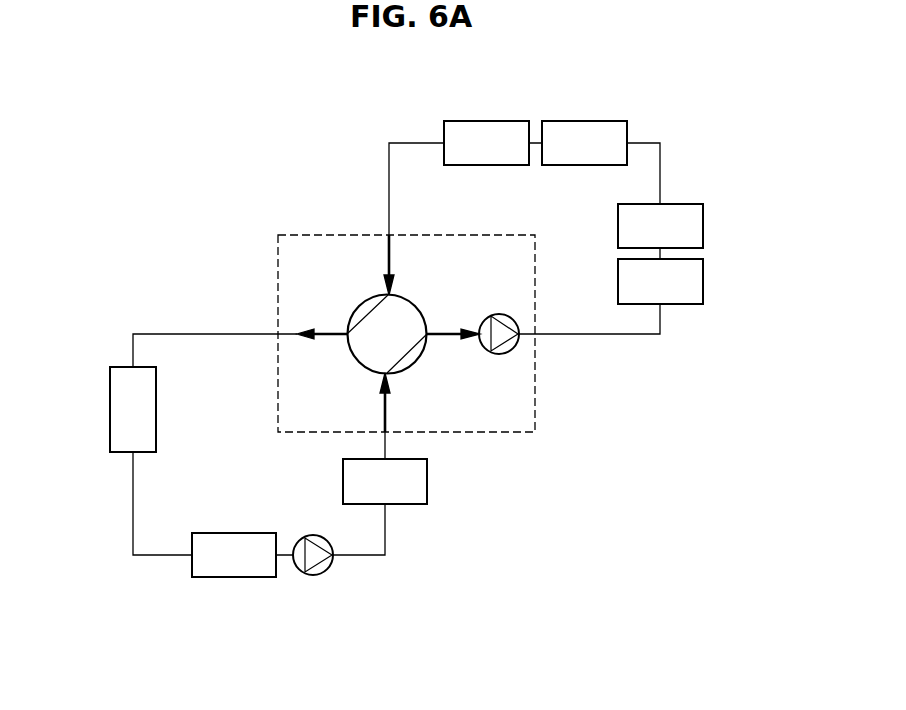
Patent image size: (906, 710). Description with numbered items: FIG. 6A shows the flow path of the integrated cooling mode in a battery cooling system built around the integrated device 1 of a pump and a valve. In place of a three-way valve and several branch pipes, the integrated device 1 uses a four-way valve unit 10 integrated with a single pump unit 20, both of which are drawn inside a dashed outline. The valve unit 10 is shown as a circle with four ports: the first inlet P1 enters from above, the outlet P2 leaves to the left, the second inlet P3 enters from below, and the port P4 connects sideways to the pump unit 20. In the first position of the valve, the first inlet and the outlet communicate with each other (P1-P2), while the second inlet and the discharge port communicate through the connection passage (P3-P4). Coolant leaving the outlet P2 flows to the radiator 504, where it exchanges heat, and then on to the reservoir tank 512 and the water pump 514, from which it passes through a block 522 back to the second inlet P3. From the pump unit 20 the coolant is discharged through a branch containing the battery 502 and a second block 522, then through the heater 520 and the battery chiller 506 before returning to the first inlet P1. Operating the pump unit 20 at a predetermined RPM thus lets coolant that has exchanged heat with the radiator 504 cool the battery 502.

The integrated device of a pump and a valve 1 is at (535, 409).
The valve unit 10 is at (415, 307).
The pump unit 20 is at (510, 312).
The battery 502 is at (703, 223).
The radiator 504 is at (110, 412).
The battery chiller 506 is at (486, 121).
The reservoir tank 512 is at (232, 577).
The water pump 514 is at (315, 577).
The heater 520 is at (585, 121).
The heat exchanger 522 is at (703, 278).
The first inlet port P1 is at (373, 265).
The outlet port P2 is at (322, 322).
The second inlet port P3 is at (403, 402).
The discharge port P4 is at (453, 348).